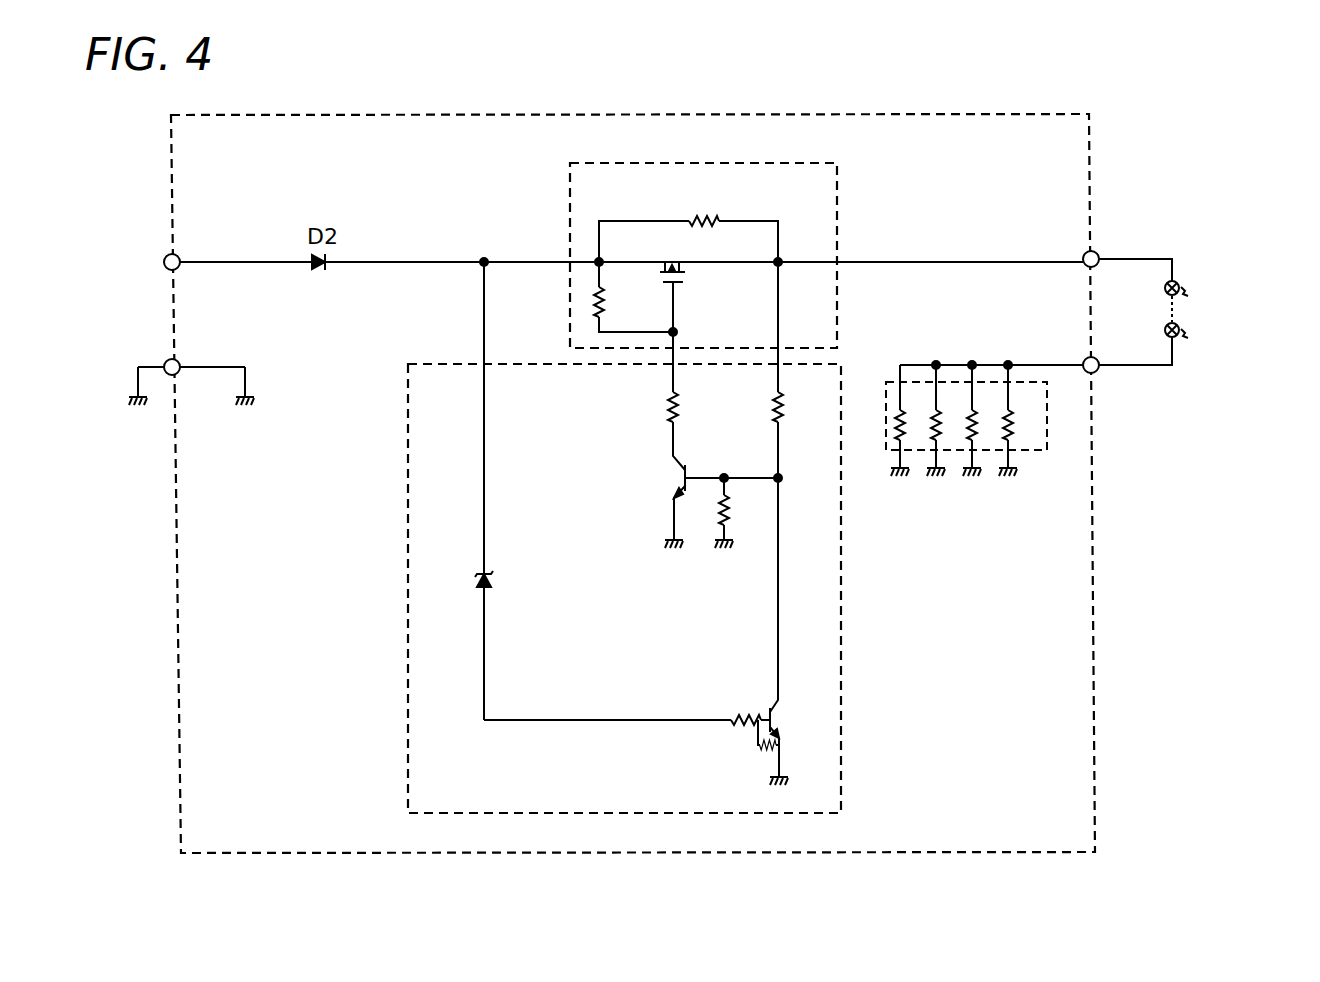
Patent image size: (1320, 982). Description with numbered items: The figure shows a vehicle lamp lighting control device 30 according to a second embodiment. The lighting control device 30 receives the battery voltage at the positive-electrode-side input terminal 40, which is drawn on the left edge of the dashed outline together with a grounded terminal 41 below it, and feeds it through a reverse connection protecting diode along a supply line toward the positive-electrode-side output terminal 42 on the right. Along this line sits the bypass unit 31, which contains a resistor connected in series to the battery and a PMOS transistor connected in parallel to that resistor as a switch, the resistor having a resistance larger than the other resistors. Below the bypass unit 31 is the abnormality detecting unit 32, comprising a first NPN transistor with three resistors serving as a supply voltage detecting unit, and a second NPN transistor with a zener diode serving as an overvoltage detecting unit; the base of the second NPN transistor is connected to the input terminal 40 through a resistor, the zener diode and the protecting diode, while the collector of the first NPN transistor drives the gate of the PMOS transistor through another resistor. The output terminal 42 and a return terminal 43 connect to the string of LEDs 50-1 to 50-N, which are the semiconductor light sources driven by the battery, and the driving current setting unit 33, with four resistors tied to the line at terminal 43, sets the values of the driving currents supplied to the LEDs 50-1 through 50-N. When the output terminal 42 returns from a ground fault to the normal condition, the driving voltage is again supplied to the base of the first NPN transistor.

The lighting control device 30 is at (959, 86).
The bypass unit 31 is at (774, 161).
The abnormality detecting unit 32 is at (842, 588).
The driving current setting unit 33 is at (1026, 452).
The positive-electrode-side input terminal 40 is at (177, 257).
The ground terminal 41 is at (177, 362).
The positive-electrode-side output terminal 42 is at (1096, 254).
The return terminal 43 is at (1096, 360).
The LED 50-1 is at (1216, 289).
The LED 50-N is at (1218, 331).